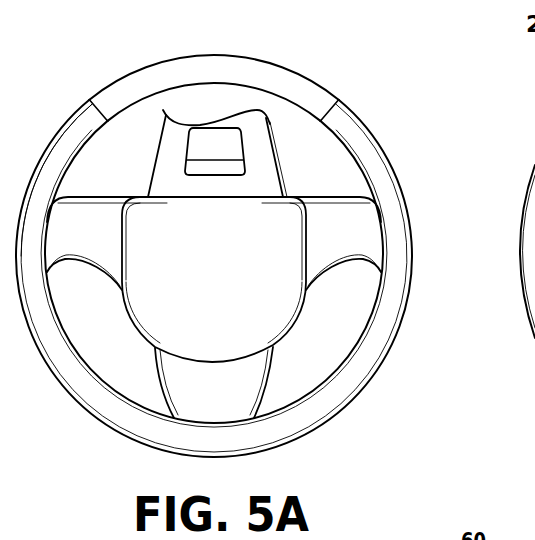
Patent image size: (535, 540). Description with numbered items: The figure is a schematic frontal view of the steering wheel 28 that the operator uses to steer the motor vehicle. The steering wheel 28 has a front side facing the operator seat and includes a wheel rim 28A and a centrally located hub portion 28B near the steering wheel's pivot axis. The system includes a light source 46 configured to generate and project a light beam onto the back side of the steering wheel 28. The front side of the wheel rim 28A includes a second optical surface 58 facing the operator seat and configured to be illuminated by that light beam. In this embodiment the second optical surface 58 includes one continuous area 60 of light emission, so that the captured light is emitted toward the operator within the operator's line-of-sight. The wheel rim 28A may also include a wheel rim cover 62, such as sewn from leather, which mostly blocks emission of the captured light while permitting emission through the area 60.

The steering wheel 28 is at (214, 234).
The wheel rim 28A is at (335, 390).
The hub portion 28B is at (237, 257).
The light source 46 is at (230, 148).
The second optical surface 58 is at (320, 77).
The area of light emission 60 is at (220, 65).
The wheel rim cover 62 is at (80, 133).